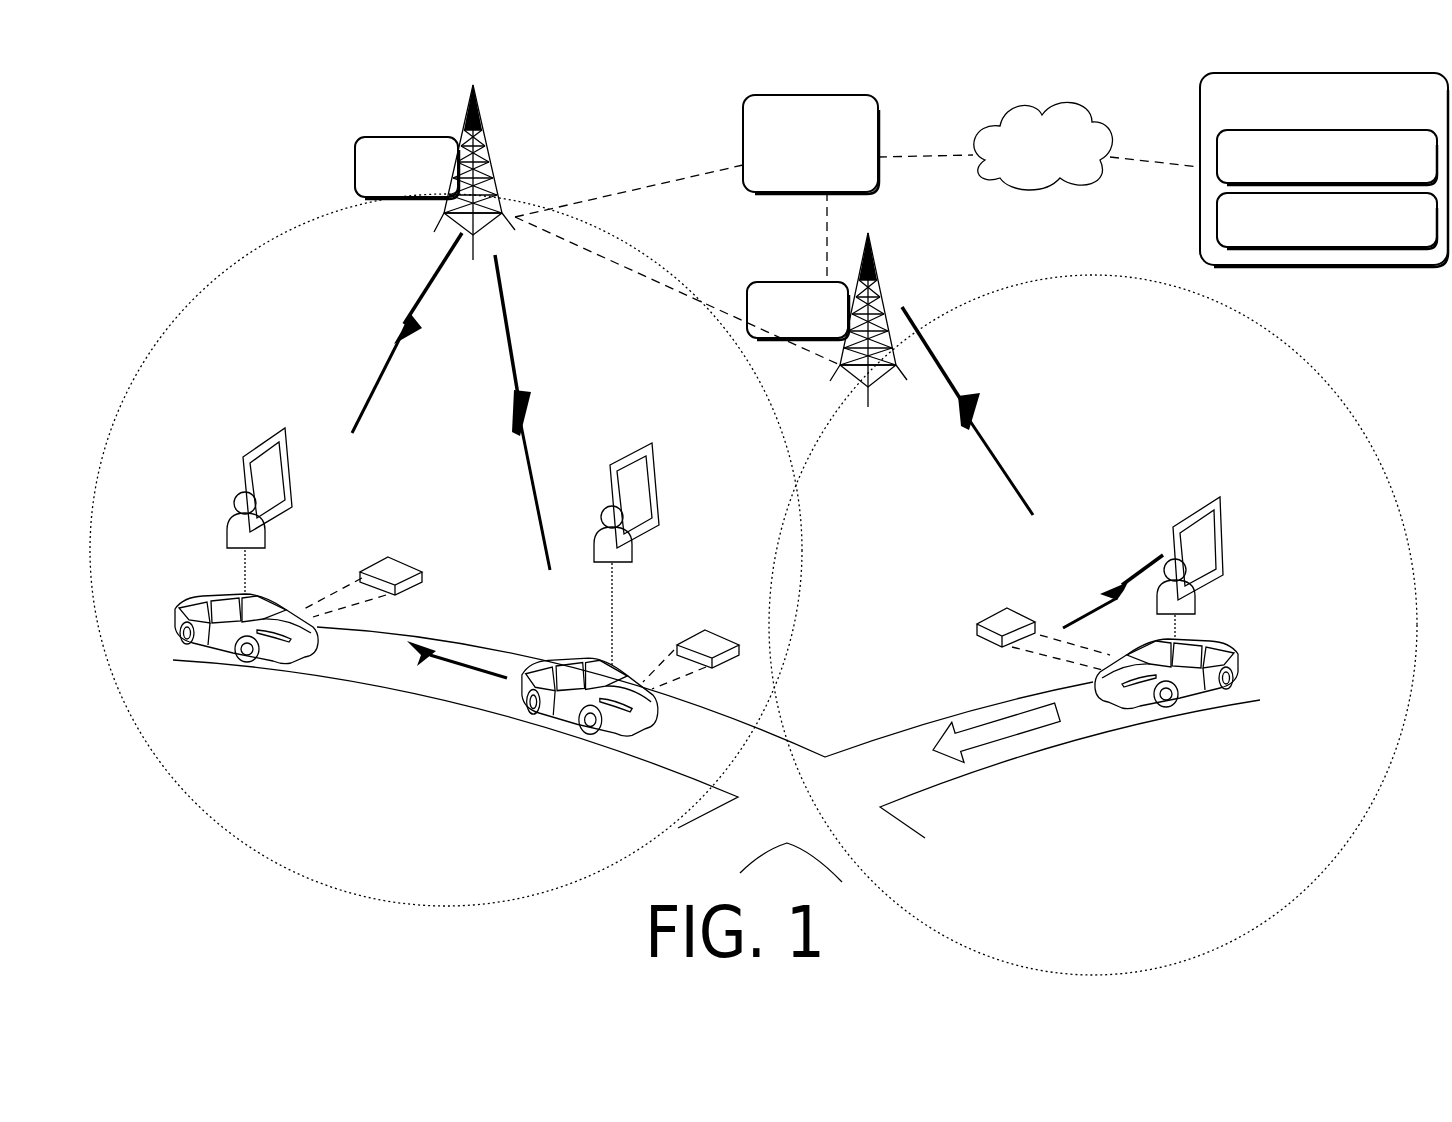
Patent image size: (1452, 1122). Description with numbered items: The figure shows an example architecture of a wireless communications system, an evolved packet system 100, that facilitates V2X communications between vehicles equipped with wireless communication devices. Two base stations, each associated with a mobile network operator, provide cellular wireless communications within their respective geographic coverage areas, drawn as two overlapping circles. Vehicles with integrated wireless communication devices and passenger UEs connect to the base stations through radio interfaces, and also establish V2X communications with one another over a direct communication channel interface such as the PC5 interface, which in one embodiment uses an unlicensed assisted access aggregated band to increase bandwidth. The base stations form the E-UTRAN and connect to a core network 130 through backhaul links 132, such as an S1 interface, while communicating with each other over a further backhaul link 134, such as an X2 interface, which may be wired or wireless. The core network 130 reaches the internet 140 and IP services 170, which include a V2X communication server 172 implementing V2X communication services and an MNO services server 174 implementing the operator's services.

The evolved packet system 100 is at (176, 96).
The core network 130 is at (811, 144).
The backhaul link 132 is at (706, 178).
The backhaul link 134 is at (660, 296).
The internet 140 is at (1043, 146).
The IP services 170 is at (1324, 170).
The V2X communication server 172 is at (1327, 157).
The MNO services server 174 is at (1327, 221).